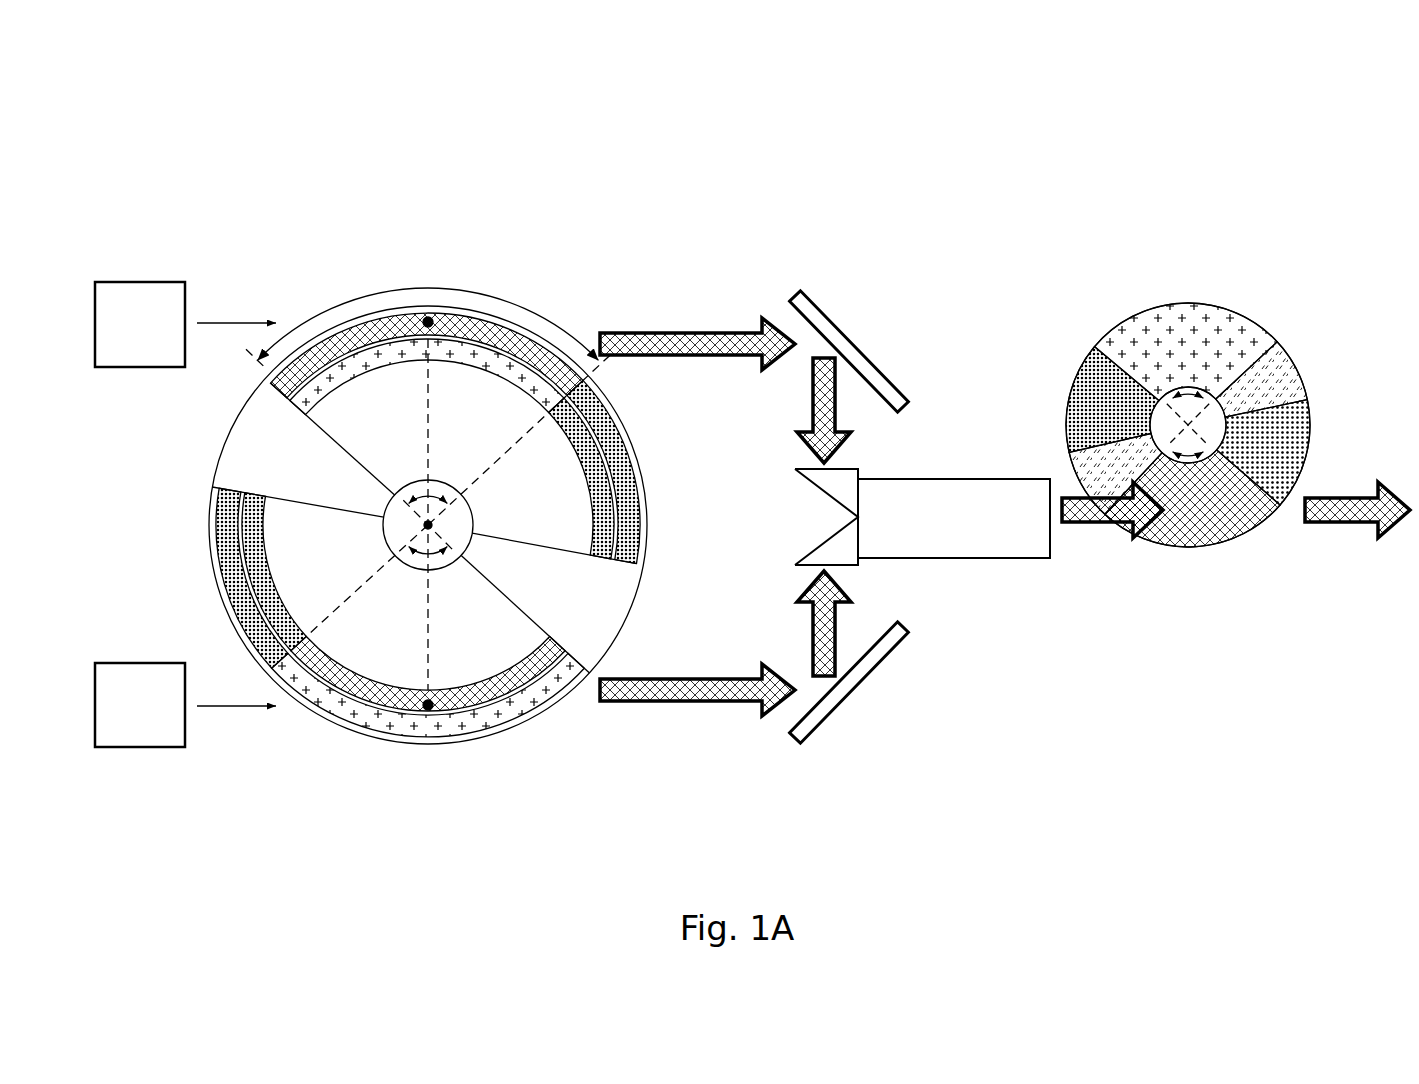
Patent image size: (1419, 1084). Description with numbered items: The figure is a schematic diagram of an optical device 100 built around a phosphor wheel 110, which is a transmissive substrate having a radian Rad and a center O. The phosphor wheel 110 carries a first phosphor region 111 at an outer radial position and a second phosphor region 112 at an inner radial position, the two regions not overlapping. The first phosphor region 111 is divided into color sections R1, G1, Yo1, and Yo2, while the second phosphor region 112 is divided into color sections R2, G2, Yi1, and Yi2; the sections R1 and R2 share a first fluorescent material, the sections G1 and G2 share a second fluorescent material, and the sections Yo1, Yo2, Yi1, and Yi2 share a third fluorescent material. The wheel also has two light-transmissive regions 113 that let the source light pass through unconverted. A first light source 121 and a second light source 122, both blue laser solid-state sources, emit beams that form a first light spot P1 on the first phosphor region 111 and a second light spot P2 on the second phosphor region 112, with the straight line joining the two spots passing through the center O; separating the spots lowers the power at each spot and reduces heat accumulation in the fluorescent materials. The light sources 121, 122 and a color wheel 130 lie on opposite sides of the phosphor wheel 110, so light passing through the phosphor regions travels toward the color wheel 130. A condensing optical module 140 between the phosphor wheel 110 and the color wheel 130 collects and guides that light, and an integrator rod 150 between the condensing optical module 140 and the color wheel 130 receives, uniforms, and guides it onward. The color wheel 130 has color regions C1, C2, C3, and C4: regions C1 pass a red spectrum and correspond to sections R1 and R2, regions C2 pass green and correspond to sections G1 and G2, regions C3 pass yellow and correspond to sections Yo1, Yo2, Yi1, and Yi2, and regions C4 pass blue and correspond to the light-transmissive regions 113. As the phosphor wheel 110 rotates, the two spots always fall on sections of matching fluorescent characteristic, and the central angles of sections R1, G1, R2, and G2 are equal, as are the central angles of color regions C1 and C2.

The optical device 100 is at (140, 76).
The phosphor wheel 110 is at (542, 170).
The first phosphor region 111 is at (437, 546).
The second phosphor region 112 is at (409, 573).
The light-transmissive region 113 is at (252, 469).
The first light source 121 is at (140, 282).
The second light source 122 is at (140, 663).
The color wheel 130 is at (1183, 381).
The condensing optical module 140 is at (899, 278).
The integrator rod 150 is at (1012, 479).
The radian Rad is at (430, 287).
The color section R1 is at (283, 393).
The color section R2 is at (380, 703).
The color section G1 is at (327, 710).
The color section G2 is at (288, 415).
The color section Yo1 is at (597, 417).
The color section Yi1 is at (600, 478).
The color section Yo2 is at (226, 540).
The color section Yi2 is at (250, 578).
The first light spot P1 is at (428, 325).
The second light spot P2 is at (428, 710).
The center O is at (428, 525).
The color region C1 is at (1190, 540).
The color region C2 is at (1180, 323).
The color region C3 is at (1090, 395).
The color region C4 is at (1283, 377).